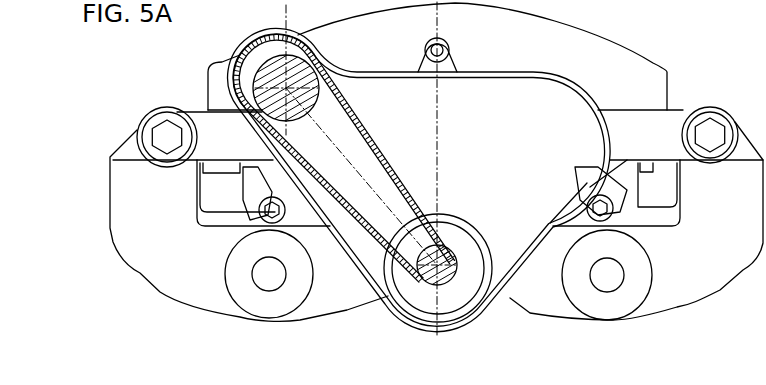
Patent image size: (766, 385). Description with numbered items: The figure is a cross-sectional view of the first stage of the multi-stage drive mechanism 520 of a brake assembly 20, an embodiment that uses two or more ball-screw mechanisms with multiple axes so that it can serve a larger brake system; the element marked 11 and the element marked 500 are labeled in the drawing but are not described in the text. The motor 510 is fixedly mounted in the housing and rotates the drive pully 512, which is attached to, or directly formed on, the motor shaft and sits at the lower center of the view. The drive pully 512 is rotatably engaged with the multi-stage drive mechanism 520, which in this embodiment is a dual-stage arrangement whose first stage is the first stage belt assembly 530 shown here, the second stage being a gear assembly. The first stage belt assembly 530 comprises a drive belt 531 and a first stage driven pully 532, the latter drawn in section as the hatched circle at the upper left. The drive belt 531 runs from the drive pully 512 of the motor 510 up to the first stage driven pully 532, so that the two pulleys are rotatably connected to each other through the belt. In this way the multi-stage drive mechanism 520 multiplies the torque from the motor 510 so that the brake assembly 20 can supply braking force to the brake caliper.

The brake assembly 20 is at (108, 67).
The vehicle 11 is at (759, 23).
The caliper housing 500 is at (590, 85).
The motor 510 is at (460, 289).
The drive pully 512 is at (432, 278).
The multi-stage drive mechanism 520 is at (419, 179).
The first stage belt assembly 530 is at (402, 157).
The drive belt 531 is at (367, 121).
The first stage driven pully 532 is at (273, 72).